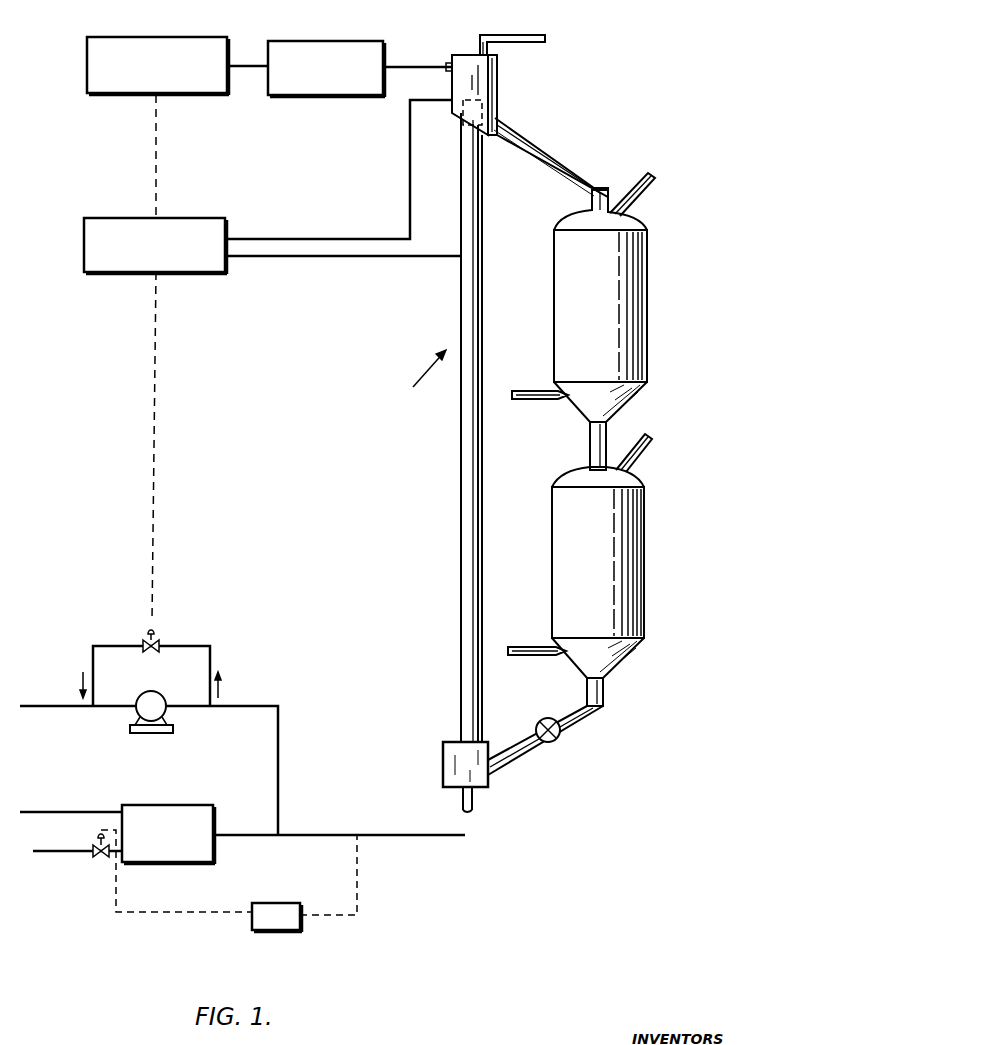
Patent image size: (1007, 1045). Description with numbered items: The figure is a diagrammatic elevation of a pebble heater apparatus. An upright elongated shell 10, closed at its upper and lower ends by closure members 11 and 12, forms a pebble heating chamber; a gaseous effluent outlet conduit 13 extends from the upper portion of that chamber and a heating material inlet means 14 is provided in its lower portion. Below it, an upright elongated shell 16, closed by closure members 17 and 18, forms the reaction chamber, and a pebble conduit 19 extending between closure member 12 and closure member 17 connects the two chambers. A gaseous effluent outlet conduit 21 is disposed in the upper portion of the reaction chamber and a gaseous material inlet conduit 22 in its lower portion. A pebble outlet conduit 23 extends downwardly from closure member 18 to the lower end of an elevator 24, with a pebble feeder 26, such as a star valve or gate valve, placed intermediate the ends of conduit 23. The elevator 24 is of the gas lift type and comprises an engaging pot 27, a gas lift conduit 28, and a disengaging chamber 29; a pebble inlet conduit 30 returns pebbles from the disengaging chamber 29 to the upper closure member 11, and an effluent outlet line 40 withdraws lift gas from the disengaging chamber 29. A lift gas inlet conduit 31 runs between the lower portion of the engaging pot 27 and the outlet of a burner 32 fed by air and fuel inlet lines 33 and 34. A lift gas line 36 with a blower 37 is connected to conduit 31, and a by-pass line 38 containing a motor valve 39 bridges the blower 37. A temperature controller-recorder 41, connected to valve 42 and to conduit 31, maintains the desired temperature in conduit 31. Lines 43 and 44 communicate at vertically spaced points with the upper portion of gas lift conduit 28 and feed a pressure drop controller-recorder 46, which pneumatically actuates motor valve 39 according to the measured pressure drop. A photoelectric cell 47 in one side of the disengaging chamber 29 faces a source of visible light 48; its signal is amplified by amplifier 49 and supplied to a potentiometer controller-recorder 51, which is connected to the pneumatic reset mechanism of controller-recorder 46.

The upright elongated shell 10 is at (640, 310).
The closure member 11 is at (582, 220).
The closure member 12 is at (627, 396).
The gaseous effluent outlet conduit 13 is at (650, 190).
The heating material inlet means 14 is at (528, 390).
The upright elongated shell 16 is at (626, 545).
The closure member 17 is at (573, 485).
The closure member 18 is at (621, 654).
The pebble conduit 19 is at (590, 446).
The gaseous effluent outlet conduit 21 is at (652, 452).
The gaseous material inlet conduit 22 is at (530, 650).
The pebble outlet conduit 23 is at (606, 698).
The elevator 24 is at (417, 380).
The pebble feeder 26 is at (555, 742).
The engaging pot 27 is at (443, 762).
The gas lift conduit 28 is at (460, 512).
The disengaging chamber 29 is at (495, 90).
The pebble inlet conduit 30 is at (565, 161).
The lift gas inlet conduit 31 is at (396, 835).
The burner 32 is at (168, 805).
The air inlet line 33 is at (96, 812).
The fuel inlet line 34 is at (63, 853).
The lift gas line 36 is at (281, 730).
The blower 37 is at (147, 692).
The by-pass line 38 is at (213, 657).
The motor valve 39 is at (157, 641).
The effluent outlet line 40 is at (517, 35).
The temperature controller-recorder 41 is at (278, 903).
The valve 42 is at (101, 860).
The pressure tap line 43 is at (410, 148).
The pressure tap line 44 is at (356, 258).
The pressure drop controller-recorder 46 is at (194, 220).
The photoelectric cell 47 is at (447, 65).
The source of visible light 48 is at (499, 65).
The amplifier 49 is at (328, 40).
The potentiometer controller-recorder 51 is at (151, 38).